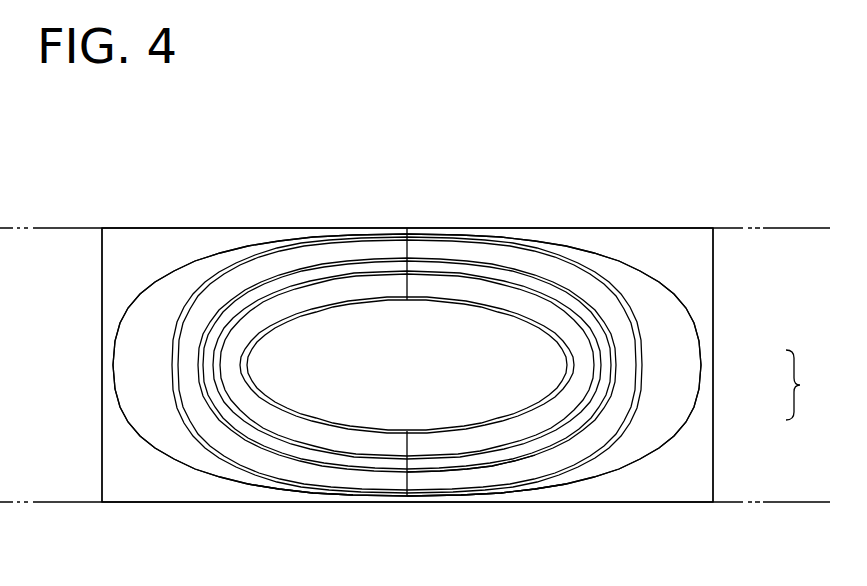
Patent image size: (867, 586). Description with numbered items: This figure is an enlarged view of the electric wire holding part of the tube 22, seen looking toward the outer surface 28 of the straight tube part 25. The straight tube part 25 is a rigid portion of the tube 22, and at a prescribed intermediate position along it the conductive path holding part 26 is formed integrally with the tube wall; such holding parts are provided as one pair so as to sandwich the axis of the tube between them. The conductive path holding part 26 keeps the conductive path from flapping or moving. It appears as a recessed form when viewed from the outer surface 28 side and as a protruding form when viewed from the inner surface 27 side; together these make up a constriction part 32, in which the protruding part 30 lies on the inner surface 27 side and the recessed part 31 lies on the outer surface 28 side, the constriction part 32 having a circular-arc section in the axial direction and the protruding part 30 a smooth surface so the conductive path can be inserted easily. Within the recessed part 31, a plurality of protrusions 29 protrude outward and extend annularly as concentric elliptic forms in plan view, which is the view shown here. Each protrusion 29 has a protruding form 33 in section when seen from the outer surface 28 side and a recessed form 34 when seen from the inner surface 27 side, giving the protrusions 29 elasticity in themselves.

The piezoelectric element 22 is at (589, 163).
The straight tube part 25 is at (690, 487).
The conductive path holding part 26 is at (367, 332).
The inner surface 27 is at (697, 251).
The outer surface 28 is at (697, 283).
The protrusions 29 is at (503, 260).
The protruding part 30 is at (683, 358).
The recessed part 31 is at (682, 390).
The constriction part 32 is at (804, 385).
The protruding forms 33 is at (463, 478).
The recessed forms 34 is at (495, 473).